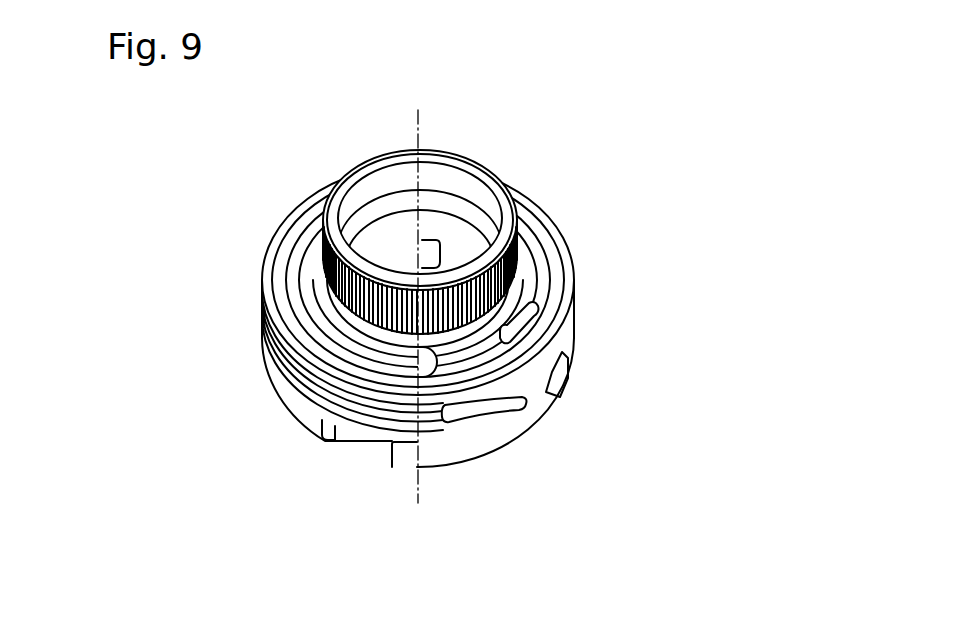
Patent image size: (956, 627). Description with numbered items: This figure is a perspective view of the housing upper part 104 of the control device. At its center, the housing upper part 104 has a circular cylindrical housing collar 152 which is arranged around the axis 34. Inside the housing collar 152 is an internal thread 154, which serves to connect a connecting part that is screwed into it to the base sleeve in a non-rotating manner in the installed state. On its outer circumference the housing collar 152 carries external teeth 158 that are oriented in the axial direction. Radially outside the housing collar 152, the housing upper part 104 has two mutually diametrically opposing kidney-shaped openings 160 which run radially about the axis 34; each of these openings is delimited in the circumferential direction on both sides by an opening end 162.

The housing upper part 104 is at (435, 288).
The housing collar 152 is at (515, 247).
The internal thread 154 is at (435, 227).
The external teeth 158 is at (551, 244).
The kidney-shaped openings 160 is at (537, 292).
The opening end 162 is at (427, 363).
The axis 34 is at (413, 490).